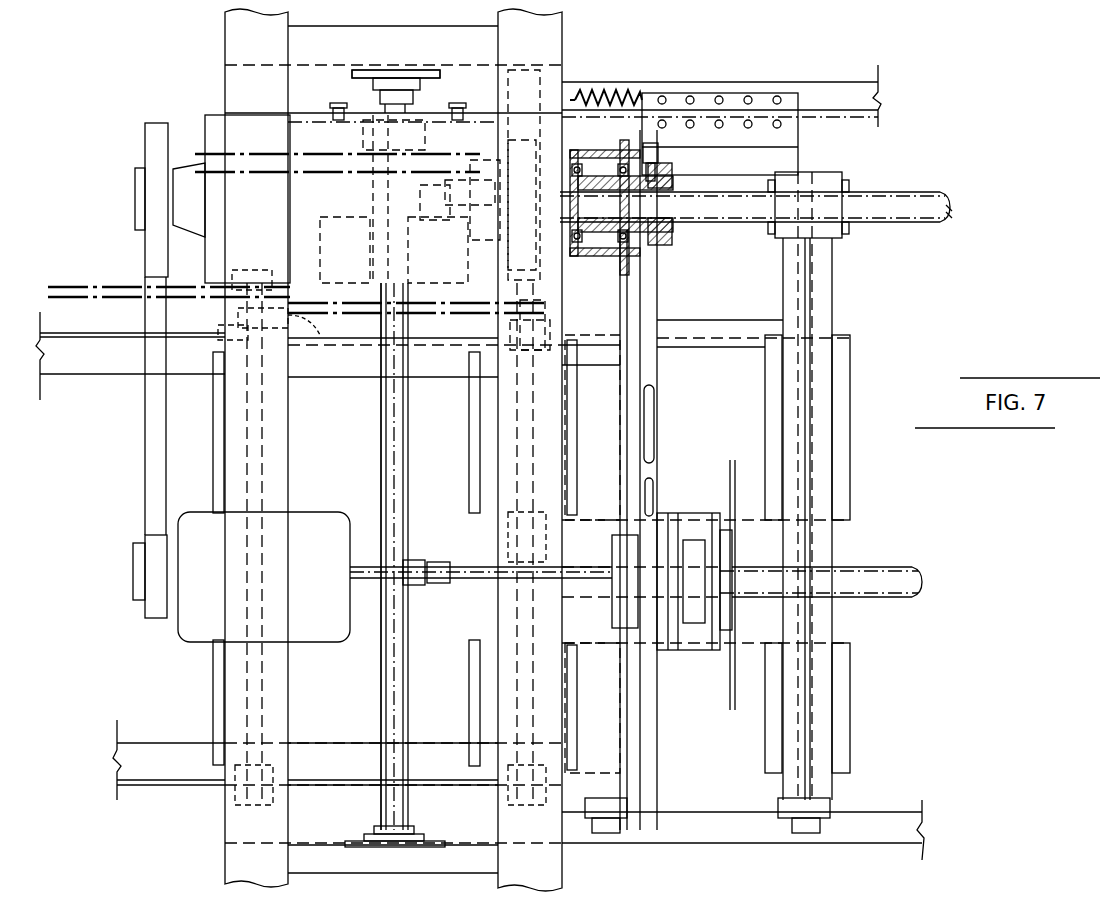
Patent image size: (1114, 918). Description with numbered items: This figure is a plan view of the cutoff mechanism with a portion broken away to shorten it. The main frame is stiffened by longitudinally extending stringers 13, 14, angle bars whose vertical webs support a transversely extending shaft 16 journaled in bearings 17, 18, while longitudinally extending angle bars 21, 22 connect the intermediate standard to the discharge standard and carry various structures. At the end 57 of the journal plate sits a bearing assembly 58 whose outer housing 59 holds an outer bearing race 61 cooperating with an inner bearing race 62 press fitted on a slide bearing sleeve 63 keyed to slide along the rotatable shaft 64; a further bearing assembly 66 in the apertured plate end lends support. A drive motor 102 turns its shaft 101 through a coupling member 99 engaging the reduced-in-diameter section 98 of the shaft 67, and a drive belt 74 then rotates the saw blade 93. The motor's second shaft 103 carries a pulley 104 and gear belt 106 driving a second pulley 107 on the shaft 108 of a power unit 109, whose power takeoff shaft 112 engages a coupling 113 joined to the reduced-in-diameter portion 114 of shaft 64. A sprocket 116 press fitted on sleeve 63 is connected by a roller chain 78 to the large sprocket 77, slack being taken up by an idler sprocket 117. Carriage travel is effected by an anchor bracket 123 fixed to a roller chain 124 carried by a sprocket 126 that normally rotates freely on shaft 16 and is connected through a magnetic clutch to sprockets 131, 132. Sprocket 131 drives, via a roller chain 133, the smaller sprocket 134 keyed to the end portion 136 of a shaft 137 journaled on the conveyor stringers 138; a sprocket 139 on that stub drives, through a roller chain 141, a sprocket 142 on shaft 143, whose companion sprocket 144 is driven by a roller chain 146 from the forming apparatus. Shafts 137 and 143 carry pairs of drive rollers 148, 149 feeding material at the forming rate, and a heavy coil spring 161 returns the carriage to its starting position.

The longitudinally extending stringer 13 is at (436, 869).
The longitudinally extending stringer 14 is at (435, 40).
The transversely extending shaft 16 is at (380, 697).
The bearing 17 is at (358, 835).
The bearing 18 is at (440, 76).
The longitudinally extending angle bar 21 is at (716, 840).
The longitudinally extending angle bar 22 is at (852, 85).
The end of journal plate 57 is at (626, 150).
The bearing assembly 58 is at (600, 142).
The outer housing 59 is at (578, 150).
The outer bearing race 61 is at (570, 150).
The inner bearing race 62 is at (572, 215).
The slide bearing sleeve 63 is at (632, 190).
The rotatable shaft 64 is at (918, 198).
The bearing assembly 66 is at (572, 172).
The shaft 67 is at (472, 590).
The drive belt 74 is at (692, 622).
The sprocket 77 is at (654, 488).
The roller chain 78 is at (660, 165).
The saw blade 93 is at (740, 460).
The reduced-in-diameter section 98 is at (438, 568).
The coupling member 99 is at (412, 562).
The motor shaft 101 is at (368, 612).
The drive motor 102 is at (335, 584).
The second shaft 103 is at (167, 605).
The pulley 104 is at (145, 540).
The gear belt 106 is at (145, 426).
The second pulley 107 is at (145, 132).
The shaft of power unit 108 is at (135, 192).
The power unit 109 is at (216, 118).
The power takeoff shaft 112 is at (434, 250).
The coupling 113 is at (455, 220).
The reduced-in-diameter portion 114 is at (483, 180).
The sprocket 116 is at (660, 240).
The idler sprocket 117 is at (675, 437).
The anchor bracket 123 is at (738, 92).
The roller chain 124 is at (336, 110).
The sprocket 126 is at (360, 100).
The sprocket 131 is at (340, 200).
The sprocket 132 is at (330, 165).
The roller chain 133 is at (300, 192).
The sprocket 134 is at (530, 215).
The end portion of shaft 136 is at (520, 288).
The shaft 137 is at (525, 340).
The elongated stringers 138 is at (438, 365).
The sprocket 139 is at (490, 298).
The roller chain 141 is at (228, 310).
The sprocket 142 is at (318, 340).
The shaft 143 is at (215, 345).
The companion sprocket 144 is at (250, 275).
The roller chain 146 is at (100, 292).
The drive rollers 148 is at (213, 445).
The drive rollers 149 is at (469, 458).
The heavy coil spring 161 is at (624, 95).